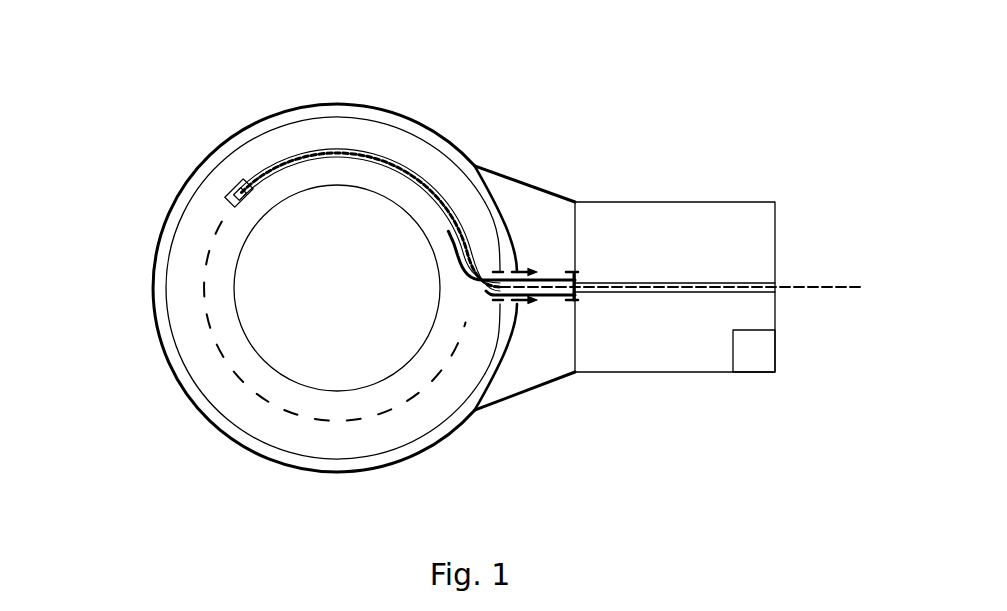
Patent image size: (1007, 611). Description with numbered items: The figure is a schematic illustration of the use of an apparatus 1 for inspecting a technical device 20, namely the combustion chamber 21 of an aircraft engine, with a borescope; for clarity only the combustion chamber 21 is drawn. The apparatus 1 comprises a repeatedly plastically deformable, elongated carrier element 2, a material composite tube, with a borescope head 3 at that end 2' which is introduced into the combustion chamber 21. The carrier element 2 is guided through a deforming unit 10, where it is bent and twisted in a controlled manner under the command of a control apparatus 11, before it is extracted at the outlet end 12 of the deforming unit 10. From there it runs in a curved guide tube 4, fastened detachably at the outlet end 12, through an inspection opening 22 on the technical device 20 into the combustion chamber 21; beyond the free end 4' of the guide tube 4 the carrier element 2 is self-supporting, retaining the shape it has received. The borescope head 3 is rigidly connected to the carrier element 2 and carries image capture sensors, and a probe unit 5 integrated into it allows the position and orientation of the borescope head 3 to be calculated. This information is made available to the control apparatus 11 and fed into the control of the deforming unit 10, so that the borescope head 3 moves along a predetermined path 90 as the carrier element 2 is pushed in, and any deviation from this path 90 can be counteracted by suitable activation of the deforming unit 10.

The apparatus 1 is at (815, 155).
The technical device 20 is at (208, 124).
The combustion chamber 21 is at (168, 242).
The carrier element 2 is at (371, 172).
The end of the carrier element 2' is at (369, 181).
The borescope head 3 is at (234, 184).
The probe unit 5 is at (244, 198).
The predetermined path 90 is at (218, 356).
The guide tube 4 is at (475, 321).
The free end of the guide tube 4' is at (486, 256).
The inspection opening 22 is at (518, 268).
The outlet end 12 is at (578, 270).
The deforming unit 10 is at (672, 202).
The control apparatus 11 is at (742, 365).